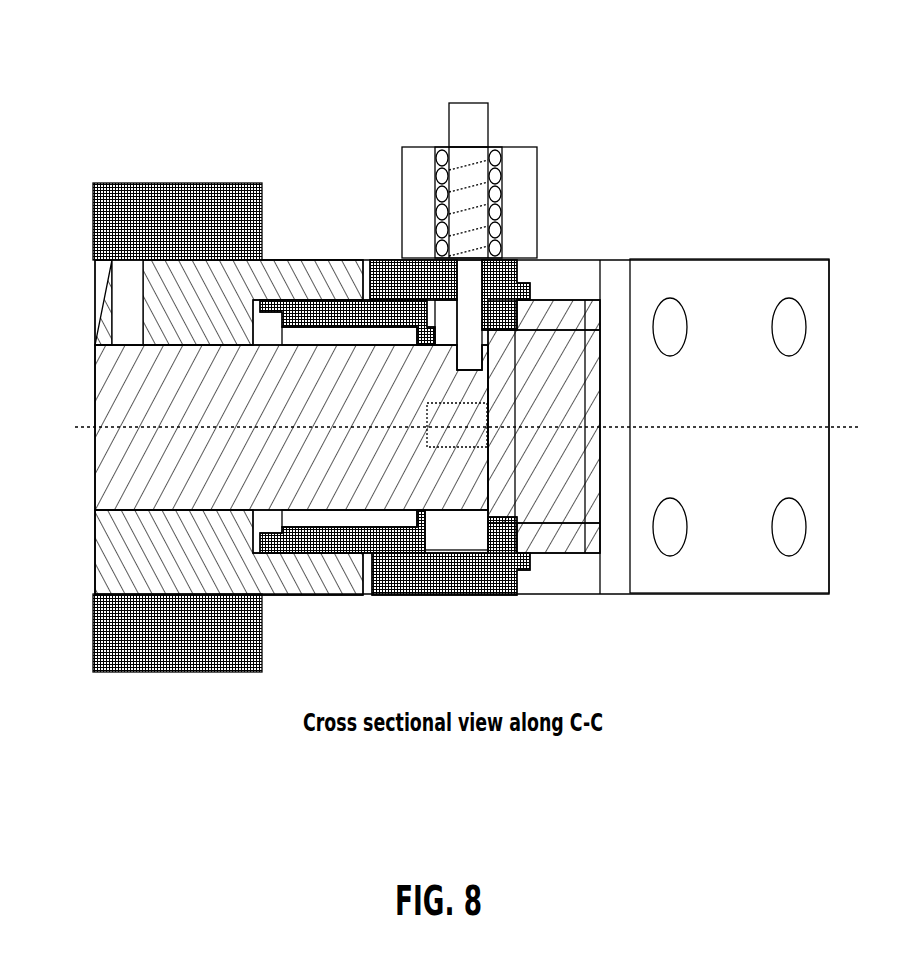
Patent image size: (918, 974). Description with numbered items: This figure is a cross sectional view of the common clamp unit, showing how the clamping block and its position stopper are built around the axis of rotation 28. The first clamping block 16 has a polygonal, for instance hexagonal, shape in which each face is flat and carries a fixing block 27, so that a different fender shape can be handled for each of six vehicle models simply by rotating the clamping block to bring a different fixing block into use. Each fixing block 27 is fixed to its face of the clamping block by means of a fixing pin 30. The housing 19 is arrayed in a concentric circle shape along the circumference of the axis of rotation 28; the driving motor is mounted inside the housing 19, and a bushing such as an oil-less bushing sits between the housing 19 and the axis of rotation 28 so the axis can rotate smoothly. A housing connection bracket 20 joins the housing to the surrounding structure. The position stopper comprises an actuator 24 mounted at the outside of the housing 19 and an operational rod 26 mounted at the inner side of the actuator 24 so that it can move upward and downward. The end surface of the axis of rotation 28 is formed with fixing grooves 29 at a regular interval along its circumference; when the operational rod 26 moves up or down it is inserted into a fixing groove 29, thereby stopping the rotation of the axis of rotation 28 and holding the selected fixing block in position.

The first clamping block 16 is at (289, 275).
The housing 19 is at (395, 282).
The housing connection bracket 20 is at (712, 257).
The actuator 24 is at (420, 168).
The operational rod 26 is at (480, 123).
The fixing block 27 is at (170, 200).
The rotational axis 28 is at (105, 397).
The fixing groove 29 is at (472, 347).
The fixing pin 30 is at (120, 302).